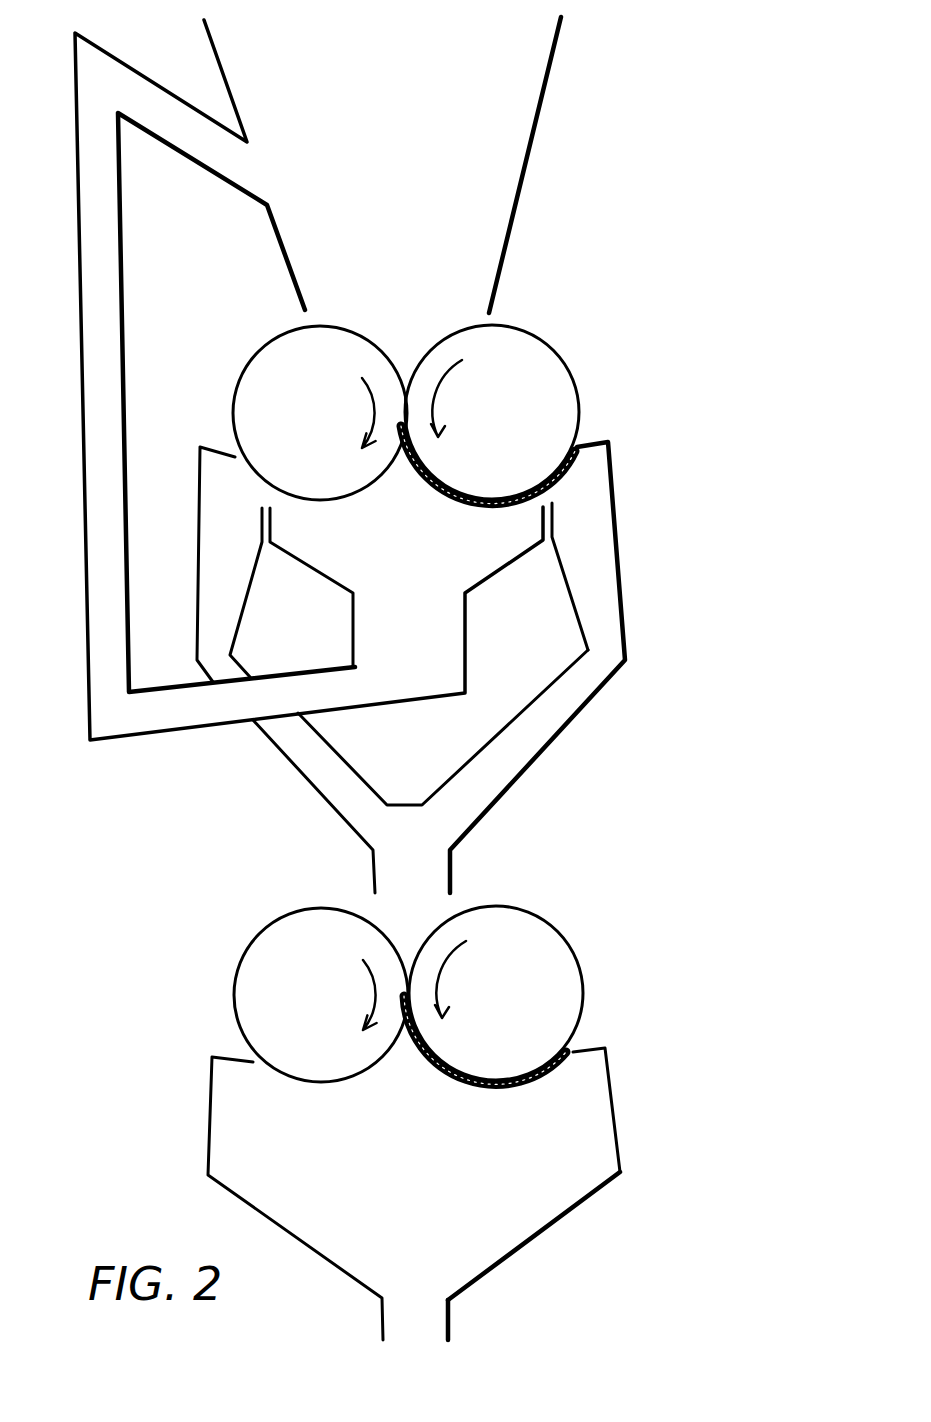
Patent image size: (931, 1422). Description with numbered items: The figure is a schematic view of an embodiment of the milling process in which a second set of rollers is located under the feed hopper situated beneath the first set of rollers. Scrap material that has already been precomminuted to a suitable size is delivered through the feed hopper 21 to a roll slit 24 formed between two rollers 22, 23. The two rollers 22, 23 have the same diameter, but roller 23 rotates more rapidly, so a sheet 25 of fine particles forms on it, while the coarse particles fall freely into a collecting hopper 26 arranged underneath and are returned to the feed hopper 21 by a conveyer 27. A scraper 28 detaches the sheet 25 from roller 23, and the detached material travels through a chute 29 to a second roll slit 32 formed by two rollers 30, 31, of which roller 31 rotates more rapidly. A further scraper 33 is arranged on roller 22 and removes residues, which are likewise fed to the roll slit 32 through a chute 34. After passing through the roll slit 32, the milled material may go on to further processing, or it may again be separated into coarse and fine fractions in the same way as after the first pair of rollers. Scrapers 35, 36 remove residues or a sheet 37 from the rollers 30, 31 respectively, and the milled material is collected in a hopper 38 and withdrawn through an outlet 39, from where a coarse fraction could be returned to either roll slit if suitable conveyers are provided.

The feed hopper 21 is at (495, 105).
The roller 22 is at (288, 352).
The roller 23 is at (543, 353).
The roll slit 24 is at (405, 377).
The sheet 25 is at (462, 497).
The collecting hopper 26 is at (343, 570).
The conveyer 27 is at (88, 398).
The scraper 28 is at (595, 440).
The chute 29 is at (545, 718).
The roller 30 is at (278, 930).
The roller 31 is at (540, 940).
The second roll slit 32 is at (408, 990).
The scraper 33 is at (208, 443).
The chute 34 is at (310, 772).
The scraper 35 is at (597, 1045).
The scraper 36 is at (223, 1053).
The sheet 37 is at (485, 1084).
The hopper 38 is at (540, 1195).
The outlet 39 is at (437, 1315).